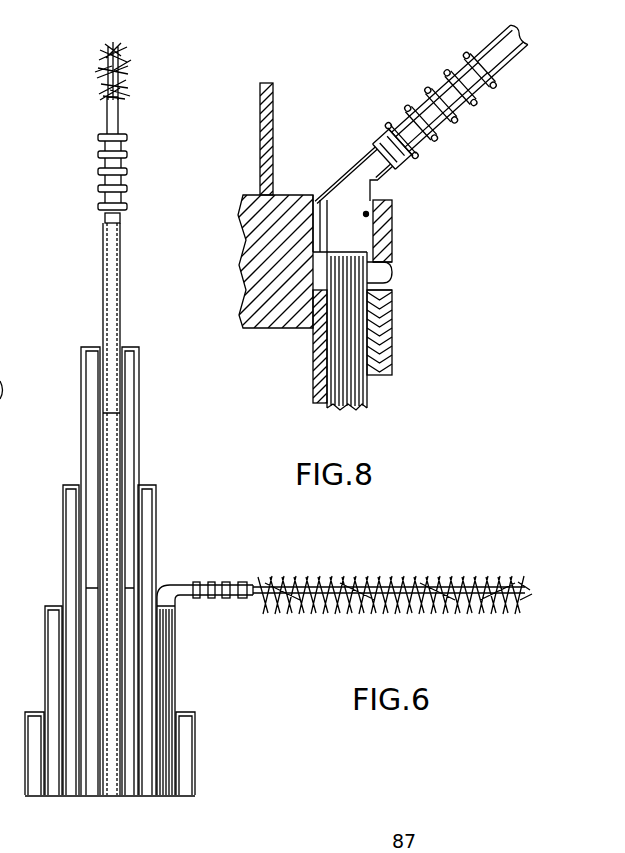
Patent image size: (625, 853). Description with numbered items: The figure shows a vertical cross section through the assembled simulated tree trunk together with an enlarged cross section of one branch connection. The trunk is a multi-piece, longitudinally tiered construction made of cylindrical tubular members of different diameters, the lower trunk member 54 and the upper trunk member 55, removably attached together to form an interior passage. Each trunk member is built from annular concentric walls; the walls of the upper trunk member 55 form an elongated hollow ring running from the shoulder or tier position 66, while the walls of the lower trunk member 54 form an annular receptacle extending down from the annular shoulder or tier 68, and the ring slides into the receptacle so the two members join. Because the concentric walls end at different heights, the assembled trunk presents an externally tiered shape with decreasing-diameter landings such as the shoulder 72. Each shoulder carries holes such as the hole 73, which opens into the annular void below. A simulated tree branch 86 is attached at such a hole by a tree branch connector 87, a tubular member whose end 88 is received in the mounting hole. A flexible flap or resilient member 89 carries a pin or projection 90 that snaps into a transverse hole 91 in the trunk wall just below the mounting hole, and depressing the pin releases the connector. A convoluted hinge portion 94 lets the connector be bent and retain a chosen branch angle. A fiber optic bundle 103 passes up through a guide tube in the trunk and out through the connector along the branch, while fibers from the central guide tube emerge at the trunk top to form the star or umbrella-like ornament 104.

In FIG. 6, the star or umbrella-like display or ornament 104 is at (118, 52).
In FIG. 6, the upper trunk member 55 is at (146, 393).
In FIG. 6, the shoulder or tier position 66 is at (137, 347).
In FIG. 6, the annular shoulder or tier 68 is at (147, 485).
In FIG. 6, the annular ring shaped landing or shoulder 72 is at (188, 712).
In FIG. 6, the lower trunk member 54 is at (186, 643).
In FIG. 8, the lower trunk member 54 is at (403, 347).
In FIG. 6, the fiber optic bundle 103 is at (168, 676).
In FIG. 8, the fiber optic bundle 103 is at (347, 417).
In FIG. 6, the tree branch connector 87 is at (182, 572).
In FIG. 8, the tree branch connector 87 is at (392, 80).
In FIG. 6, the simulated tree branch 86 is at (382, 550).
In FIG. 8, the convoluted hinge portion 94 is at (442, 146).
In FIG. 8, the hole or opening 73 is at (393, 212).
In FIG. 8, the flexible flap or resilient member 89 is at (391, 236).
In FIG. 8, the end of tubular member 88 is at (350, 238).
In FIG. 8, the pin or projection 90 is at (395, 268).
In FIG. 8, the transverse hole 91 is at (392, 284).